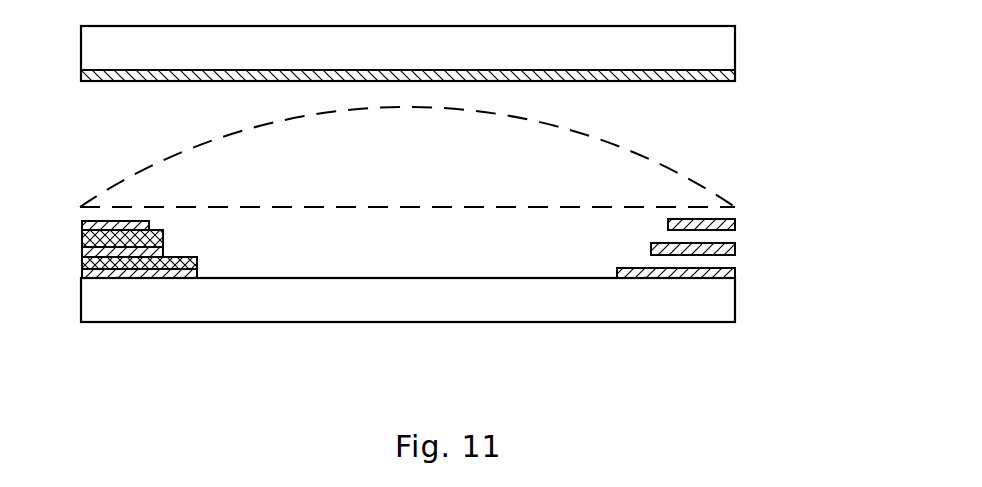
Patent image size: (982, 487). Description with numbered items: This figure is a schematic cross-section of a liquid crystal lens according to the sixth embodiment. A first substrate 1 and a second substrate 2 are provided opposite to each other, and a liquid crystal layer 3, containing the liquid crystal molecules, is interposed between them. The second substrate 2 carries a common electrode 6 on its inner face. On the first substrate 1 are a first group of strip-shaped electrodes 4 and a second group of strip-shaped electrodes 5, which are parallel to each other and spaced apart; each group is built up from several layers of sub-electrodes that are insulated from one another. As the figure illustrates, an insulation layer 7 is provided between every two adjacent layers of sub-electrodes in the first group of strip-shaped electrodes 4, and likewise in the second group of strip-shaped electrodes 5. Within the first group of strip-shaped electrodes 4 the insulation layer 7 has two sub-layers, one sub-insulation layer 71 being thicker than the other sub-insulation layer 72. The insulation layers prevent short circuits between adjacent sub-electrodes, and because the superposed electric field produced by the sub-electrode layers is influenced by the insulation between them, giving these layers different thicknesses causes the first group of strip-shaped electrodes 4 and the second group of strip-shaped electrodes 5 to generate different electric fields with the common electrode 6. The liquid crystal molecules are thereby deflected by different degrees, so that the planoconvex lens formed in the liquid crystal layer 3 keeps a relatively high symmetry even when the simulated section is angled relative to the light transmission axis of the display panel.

The first substrate 1 is at (735, 300).
The second substrate 2 is at (735, 45).
The liquid crystal layer 3 is at (707, 154).
The first group of strip-shaped electrodes 4 is at (179, 249).
The second group of strip-shaped electrodes 5 is at (740, 227).
The common electrode 6 is at (735, 72).
The insulation layer 7 is at (202, 253).
The sub-insulation layer 71 is at (163, 239).
The sub-insulation layer 72 is at (197, 264).